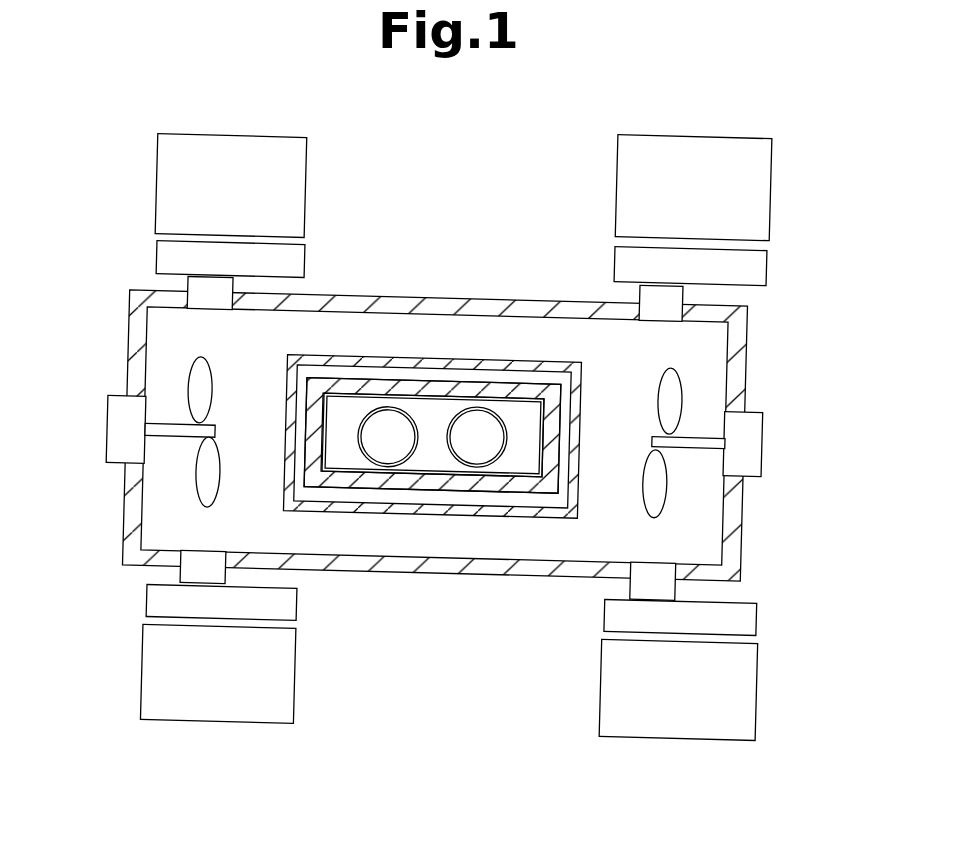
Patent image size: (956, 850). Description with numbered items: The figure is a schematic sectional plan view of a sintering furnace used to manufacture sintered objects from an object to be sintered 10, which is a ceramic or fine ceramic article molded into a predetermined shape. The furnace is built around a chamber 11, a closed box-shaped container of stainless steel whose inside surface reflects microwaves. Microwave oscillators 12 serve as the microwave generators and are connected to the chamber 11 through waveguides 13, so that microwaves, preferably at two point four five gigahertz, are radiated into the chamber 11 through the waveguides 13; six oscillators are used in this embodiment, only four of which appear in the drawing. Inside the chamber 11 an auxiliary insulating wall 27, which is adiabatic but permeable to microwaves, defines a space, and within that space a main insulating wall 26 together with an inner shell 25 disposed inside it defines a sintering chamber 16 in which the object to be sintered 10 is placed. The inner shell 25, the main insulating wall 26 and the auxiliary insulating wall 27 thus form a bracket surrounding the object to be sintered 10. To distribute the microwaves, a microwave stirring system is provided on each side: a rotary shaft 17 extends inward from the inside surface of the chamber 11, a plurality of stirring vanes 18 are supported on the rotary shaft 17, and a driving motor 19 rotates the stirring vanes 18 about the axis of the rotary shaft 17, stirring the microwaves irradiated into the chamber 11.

The object to be sintered 10 is at (362, 440).
The chamber 11 is at (363, 565).
The microwave oscillator 12 is at (158, 190).
The waveguide 13 is at (188, 290).
The sintering chamber 16 is at (356, 408).
The rotary shaft 17 is at (163, 433).
The stirring vanes 18 is at (205, 395).
The driving motor 19 is at (108, 428).
The inner shell 25 is at (500, 380).
The main insulating wall 26 is at (405, 385).
The auxiliary insulating wall 27 is at (553, 518).